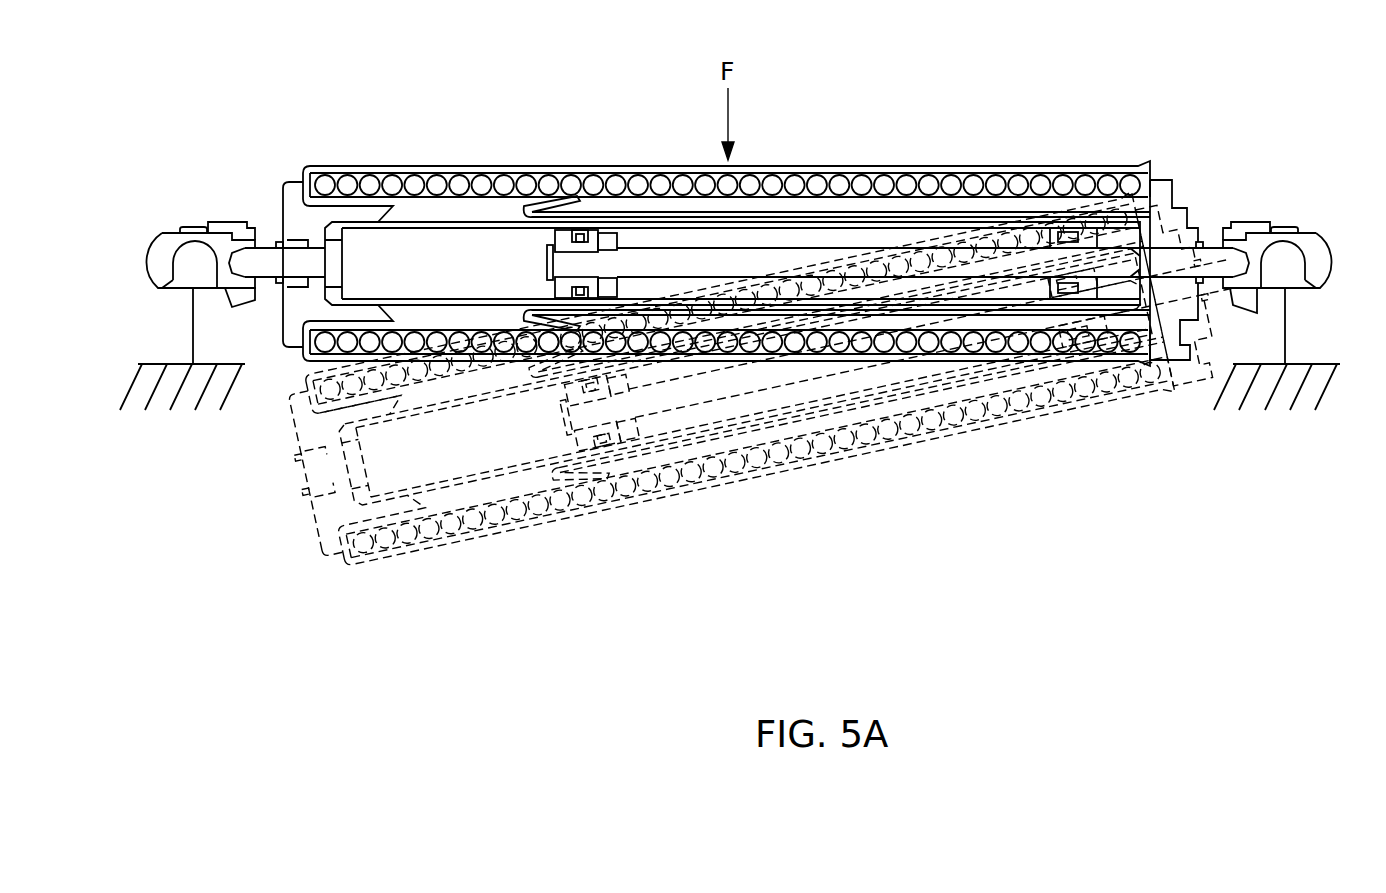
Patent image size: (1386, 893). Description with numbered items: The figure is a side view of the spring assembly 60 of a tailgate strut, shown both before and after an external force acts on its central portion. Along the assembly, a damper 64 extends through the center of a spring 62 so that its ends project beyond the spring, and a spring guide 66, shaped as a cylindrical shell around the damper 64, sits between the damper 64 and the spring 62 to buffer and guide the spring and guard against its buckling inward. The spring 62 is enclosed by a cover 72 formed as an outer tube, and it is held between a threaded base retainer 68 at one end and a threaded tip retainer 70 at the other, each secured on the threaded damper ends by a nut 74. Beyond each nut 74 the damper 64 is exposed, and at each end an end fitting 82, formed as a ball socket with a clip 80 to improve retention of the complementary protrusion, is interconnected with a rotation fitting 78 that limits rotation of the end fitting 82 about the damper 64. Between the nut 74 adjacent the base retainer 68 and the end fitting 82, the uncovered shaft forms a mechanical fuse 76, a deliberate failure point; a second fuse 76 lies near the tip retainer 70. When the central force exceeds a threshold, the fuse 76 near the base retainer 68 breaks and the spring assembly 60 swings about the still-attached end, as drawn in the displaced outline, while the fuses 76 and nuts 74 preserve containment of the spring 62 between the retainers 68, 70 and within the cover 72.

The spring assembly 60 is at (984, 134).
The spring 62 is at (922, 172).
The damper 64 is at (407, 222).
The spring guide 66 is at (1080, 210).
The base retainer 68 is at (1160, 185).
The tip retainer 70 is at (340, 217).
The cover 72 is at (524, 165).
The nut 74 is at (298, 242).
The fuse 76 is at (281, 241).
The rotation fitting 78 is at (226, 222).
The clip 80 is at (190, 227).
The end fitting 82 is at (165, 233).